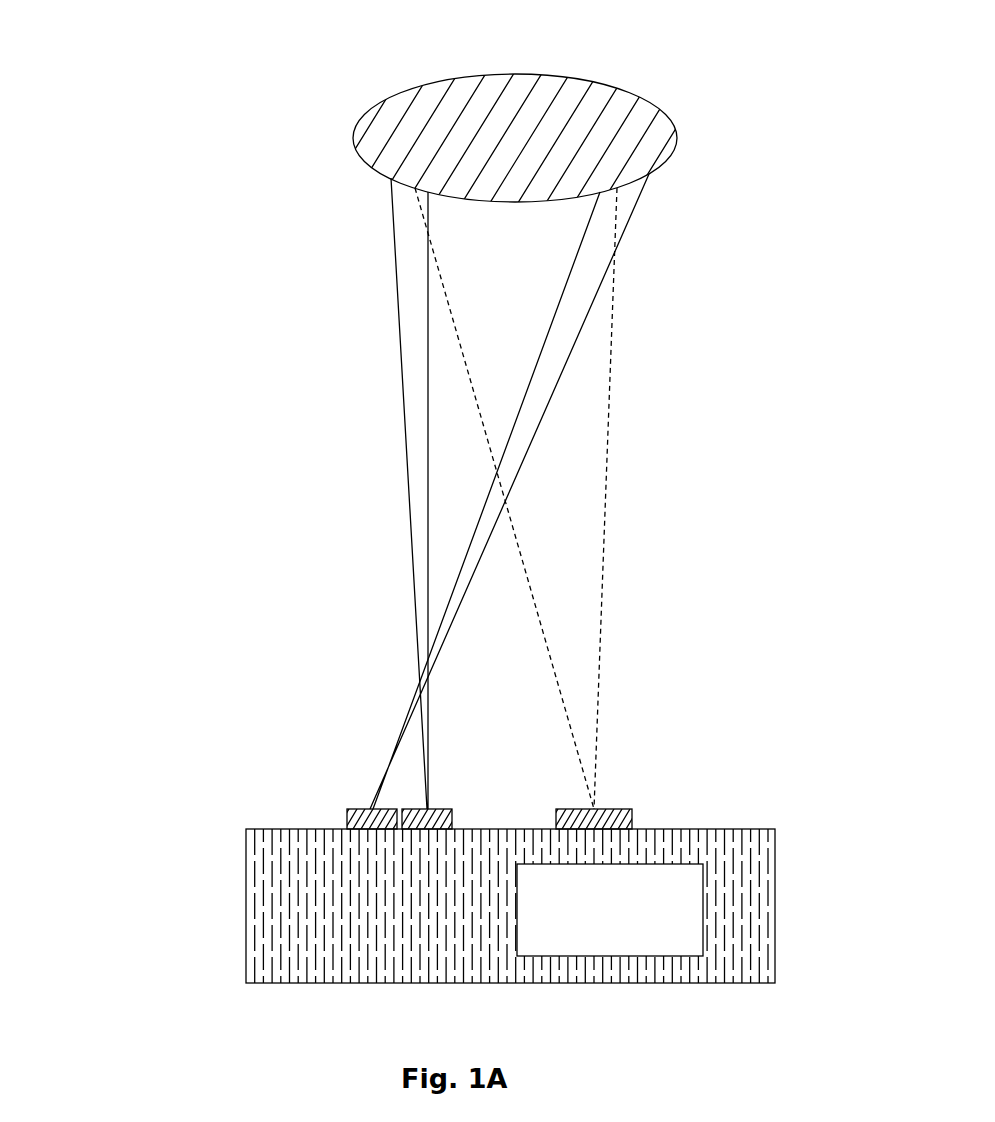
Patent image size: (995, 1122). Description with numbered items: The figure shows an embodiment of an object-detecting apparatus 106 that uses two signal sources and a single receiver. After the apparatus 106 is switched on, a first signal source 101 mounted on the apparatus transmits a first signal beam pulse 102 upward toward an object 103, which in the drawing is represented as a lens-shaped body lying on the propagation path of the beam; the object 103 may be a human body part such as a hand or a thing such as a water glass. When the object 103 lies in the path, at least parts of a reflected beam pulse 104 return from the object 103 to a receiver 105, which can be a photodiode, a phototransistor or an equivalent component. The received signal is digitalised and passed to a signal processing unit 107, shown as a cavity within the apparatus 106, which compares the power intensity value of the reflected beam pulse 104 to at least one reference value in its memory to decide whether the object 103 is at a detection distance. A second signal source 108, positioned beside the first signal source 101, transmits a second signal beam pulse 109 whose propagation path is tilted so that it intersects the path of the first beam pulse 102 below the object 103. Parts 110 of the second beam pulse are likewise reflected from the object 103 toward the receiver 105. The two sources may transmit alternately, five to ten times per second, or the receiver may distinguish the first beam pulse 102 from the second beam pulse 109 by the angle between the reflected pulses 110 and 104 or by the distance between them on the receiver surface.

The first signal source 101 is at (382, 835).
The first signal beam pulse 102 is at (420, 378).
The object 103 is at (677, 135).
The reflected beam pulse 104 is at (563, 695).
The receiver 105 is at (627, 829).
The apparatus 106 is at (747, 855).
The signal processing unit 107 is at (673, 927).
The second signal source 108 is at (348, 817).
The second signal beam pulse 109 is at (483, 555).
The reflected parts of the second beam pulse 110 is at (602, 550).